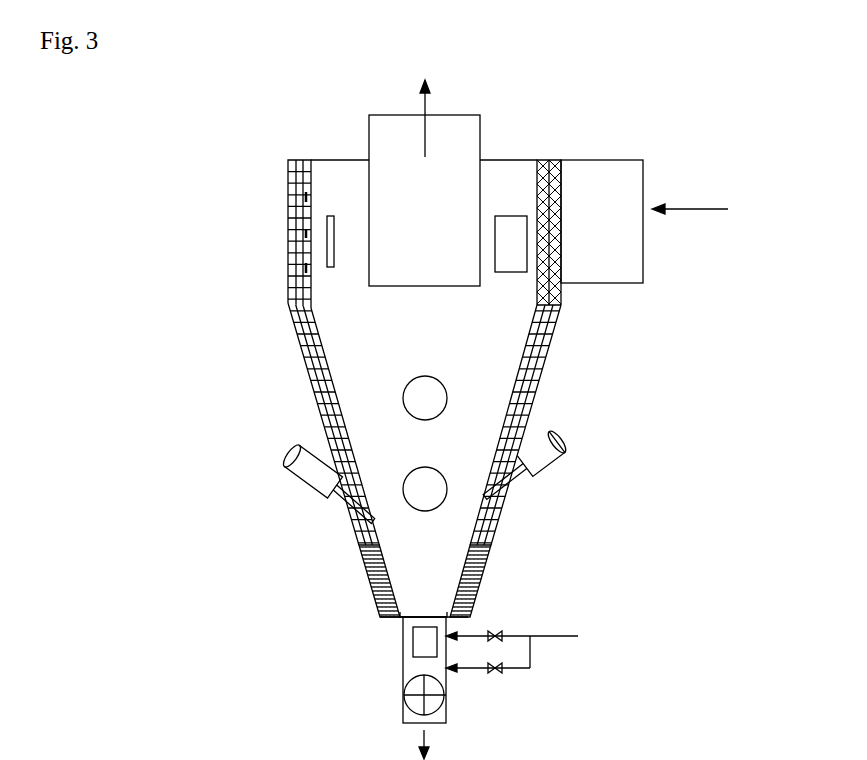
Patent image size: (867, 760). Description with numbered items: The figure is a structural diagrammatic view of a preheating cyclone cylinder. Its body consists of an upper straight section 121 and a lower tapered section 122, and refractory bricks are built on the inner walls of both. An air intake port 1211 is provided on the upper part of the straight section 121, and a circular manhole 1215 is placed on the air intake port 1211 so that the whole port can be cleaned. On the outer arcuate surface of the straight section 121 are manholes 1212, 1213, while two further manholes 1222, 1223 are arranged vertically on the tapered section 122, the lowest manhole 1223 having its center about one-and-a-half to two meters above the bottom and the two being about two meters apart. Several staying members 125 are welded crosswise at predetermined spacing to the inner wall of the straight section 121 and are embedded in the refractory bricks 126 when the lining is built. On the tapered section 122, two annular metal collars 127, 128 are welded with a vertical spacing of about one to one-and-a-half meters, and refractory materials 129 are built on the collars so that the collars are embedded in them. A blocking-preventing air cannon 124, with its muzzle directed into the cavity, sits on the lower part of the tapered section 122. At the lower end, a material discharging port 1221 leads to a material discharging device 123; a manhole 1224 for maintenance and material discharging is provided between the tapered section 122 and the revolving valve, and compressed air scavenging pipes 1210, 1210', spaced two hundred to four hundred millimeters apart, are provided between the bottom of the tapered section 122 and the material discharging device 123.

The straight section 121 is at (298, 160).
The tapered section 122 is at (307, 352).
The material discharging device 123 is at (412, 663).
The blocking-preventing air cannon 124 is at (298, 457).
The staying members 125 is at (302, 194).
The refractory bricks 126 is at (292, 205).
The annular metal collar 127 is at (335, 427).
The annular metal collar 128 is at (368, 545).
The refractory materials 129 is at (530, 353).
The compressed air scavenging pipe 1210 is at (512, 634).
The compressed air scavenging pipe 1210' is at (499, 685).
The air intake port 1211 is at (550, 170).
The manhole 1212 is at (331, 234).
The manhole 1213 is at (513, 250).
The circular manhole 1215 is at (560, 161).
The material discharging port 1221 is at (425, 615).
The manhole 1222 is at (427, 387).
The manhole 1223 is at (428, 480).
The manhole 1224 is at (422, 647).